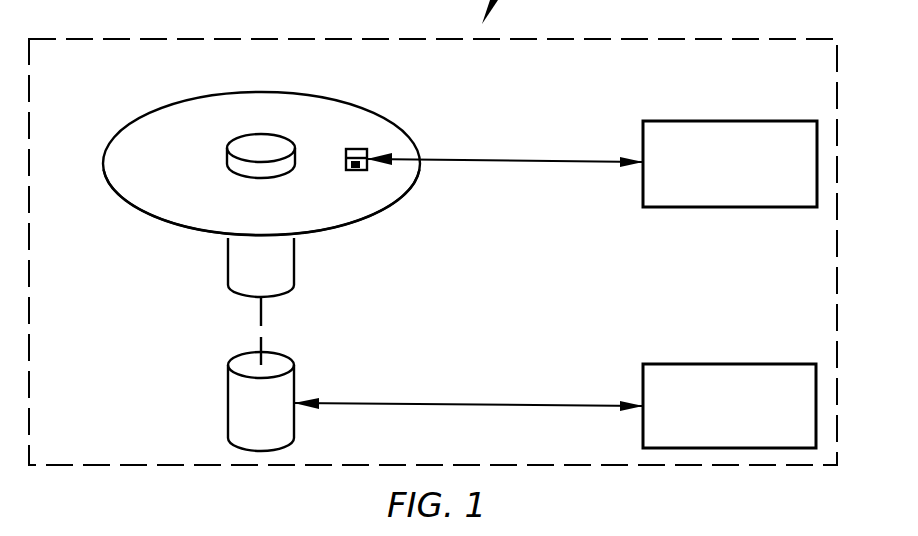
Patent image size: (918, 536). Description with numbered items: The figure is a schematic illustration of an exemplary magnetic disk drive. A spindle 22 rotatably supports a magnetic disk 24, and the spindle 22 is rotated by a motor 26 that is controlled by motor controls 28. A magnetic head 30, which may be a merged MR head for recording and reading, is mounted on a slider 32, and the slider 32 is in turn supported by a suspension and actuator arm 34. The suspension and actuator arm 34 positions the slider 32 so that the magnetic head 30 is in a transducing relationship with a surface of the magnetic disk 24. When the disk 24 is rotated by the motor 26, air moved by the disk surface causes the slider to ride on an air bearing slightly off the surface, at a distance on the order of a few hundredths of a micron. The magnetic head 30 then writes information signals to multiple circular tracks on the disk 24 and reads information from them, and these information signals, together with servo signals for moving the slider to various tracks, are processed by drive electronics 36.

The spindle 22 is at (228, 268).
The magnetic disk 24 is at (143, 128).
The motor 26 is at (228, 404).
The motor controls 28 is at (727, 364).
The magnetic head 30 is at (366, 217).
The slider 32 is at (372, 250).
The suspension and actuator arm 34 is at (500, 160).
The drive electronics 36 is at (727, 121).